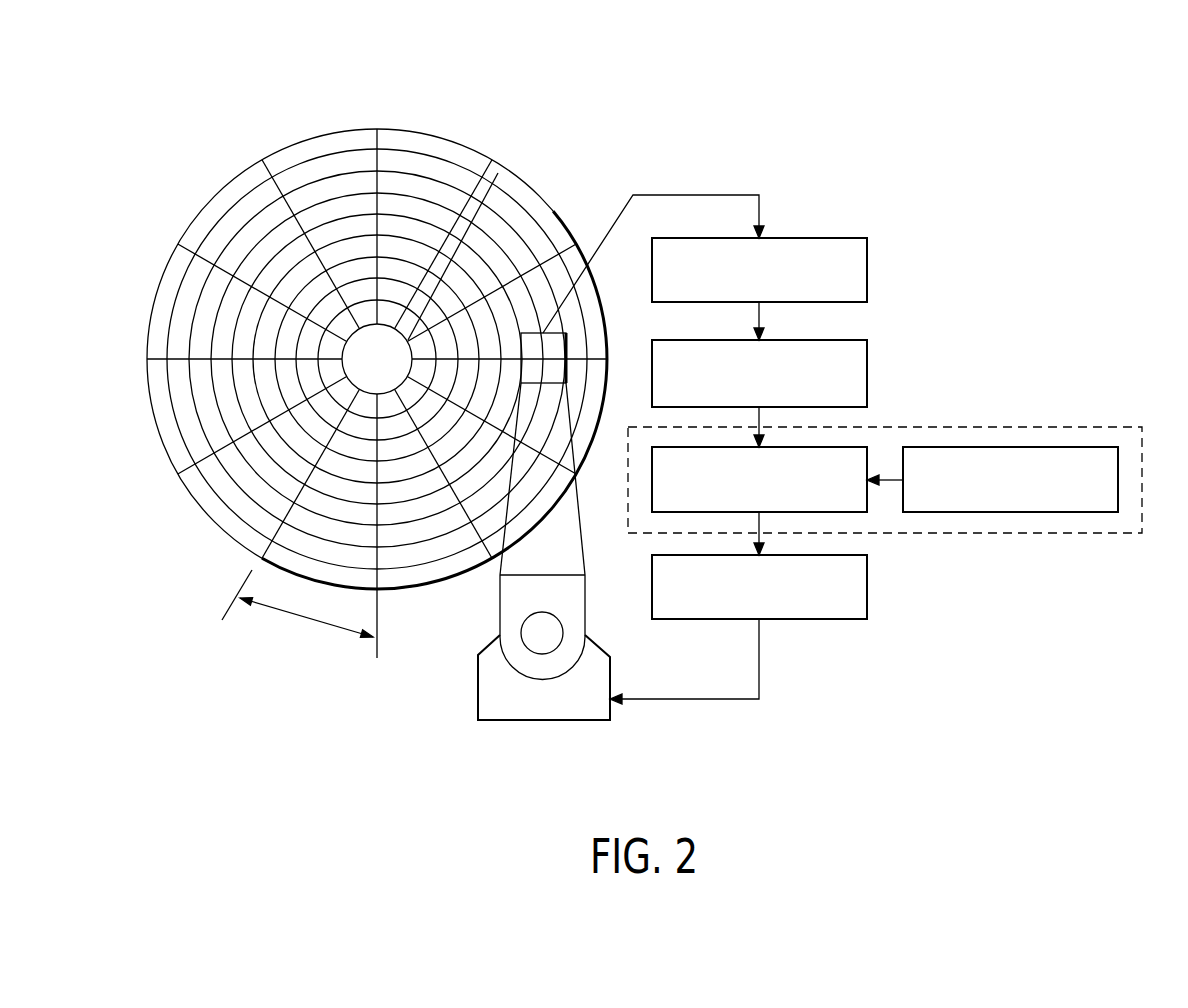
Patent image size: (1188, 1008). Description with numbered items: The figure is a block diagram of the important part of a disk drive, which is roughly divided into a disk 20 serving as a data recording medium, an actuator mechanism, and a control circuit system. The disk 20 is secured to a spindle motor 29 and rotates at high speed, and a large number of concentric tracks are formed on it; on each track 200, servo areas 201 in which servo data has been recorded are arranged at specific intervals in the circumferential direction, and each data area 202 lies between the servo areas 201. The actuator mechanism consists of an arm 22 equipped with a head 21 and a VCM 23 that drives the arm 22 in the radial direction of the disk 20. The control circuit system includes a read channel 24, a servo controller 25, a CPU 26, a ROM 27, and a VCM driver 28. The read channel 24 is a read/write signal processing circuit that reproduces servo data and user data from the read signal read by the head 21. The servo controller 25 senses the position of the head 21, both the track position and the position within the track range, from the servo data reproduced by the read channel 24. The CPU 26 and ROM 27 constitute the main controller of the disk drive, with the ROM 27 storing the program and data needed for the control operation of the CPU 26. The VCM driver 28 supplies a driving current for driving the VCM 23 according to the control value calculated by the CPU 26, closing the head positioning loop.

The disk 20 is at (344, 363).
The track 200 is at (165, 417).
The servo area 201 is at (262, 543).
The data area 202 is at (299, 614).
The head 21 is at (557, 350).
The arm 22 is at (587, 555).
The VCM (voice coil motor) 23 is at (548, 720).
The read channel 24 is at (868, 272).
The servo controller 25 is at (868, 370).
The CPU 26 is at (857, 512).
The ROM 27 is at (1080, 512).
The VCM driver 28 is at (832, 619).
The spindle motor 29 is at (503, 183).